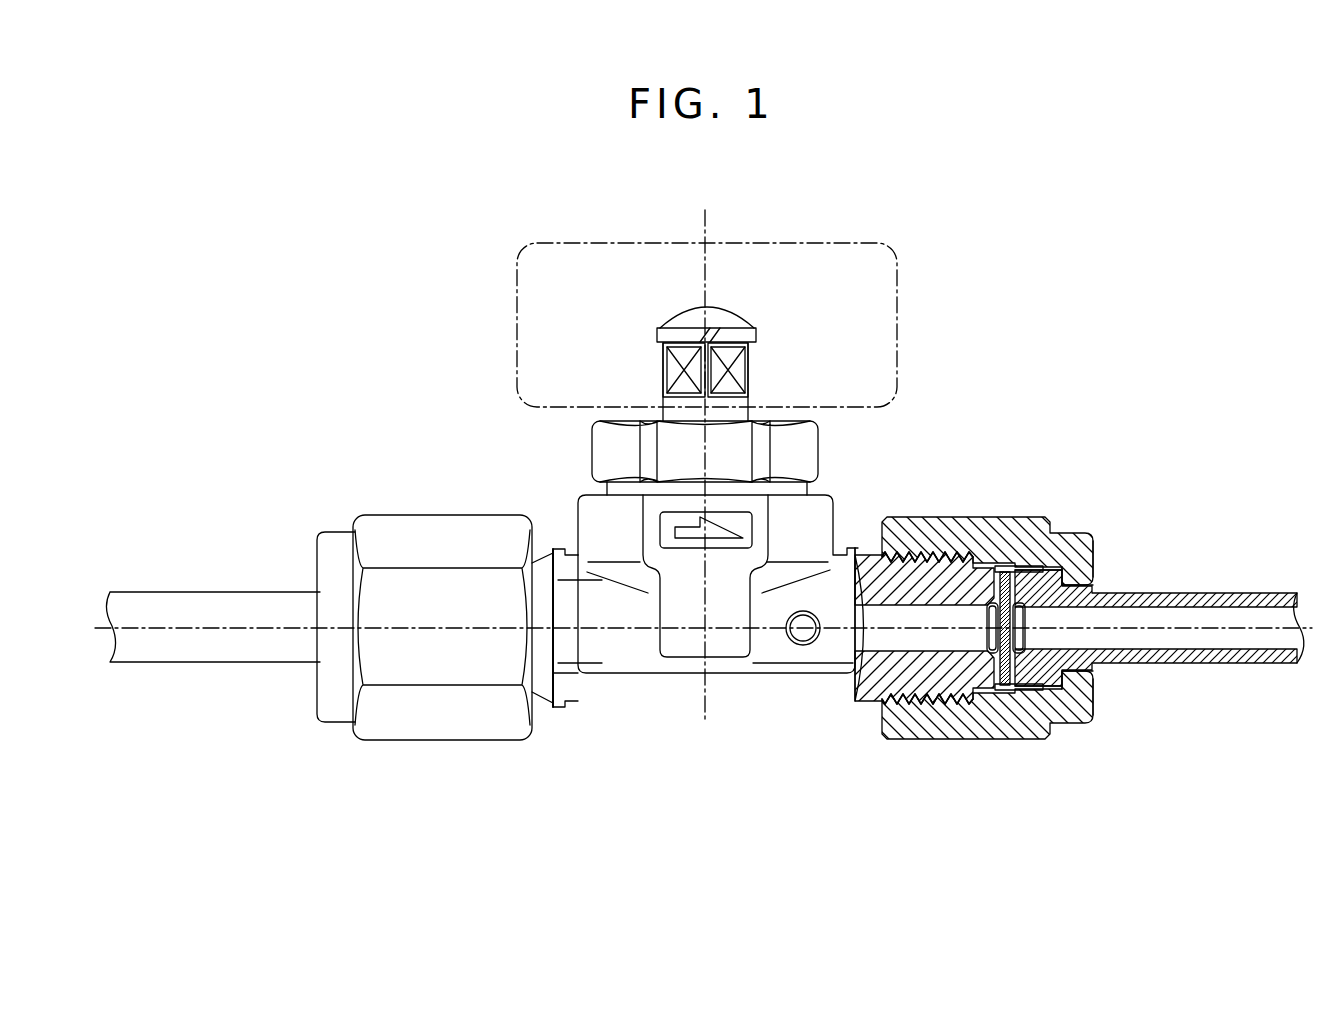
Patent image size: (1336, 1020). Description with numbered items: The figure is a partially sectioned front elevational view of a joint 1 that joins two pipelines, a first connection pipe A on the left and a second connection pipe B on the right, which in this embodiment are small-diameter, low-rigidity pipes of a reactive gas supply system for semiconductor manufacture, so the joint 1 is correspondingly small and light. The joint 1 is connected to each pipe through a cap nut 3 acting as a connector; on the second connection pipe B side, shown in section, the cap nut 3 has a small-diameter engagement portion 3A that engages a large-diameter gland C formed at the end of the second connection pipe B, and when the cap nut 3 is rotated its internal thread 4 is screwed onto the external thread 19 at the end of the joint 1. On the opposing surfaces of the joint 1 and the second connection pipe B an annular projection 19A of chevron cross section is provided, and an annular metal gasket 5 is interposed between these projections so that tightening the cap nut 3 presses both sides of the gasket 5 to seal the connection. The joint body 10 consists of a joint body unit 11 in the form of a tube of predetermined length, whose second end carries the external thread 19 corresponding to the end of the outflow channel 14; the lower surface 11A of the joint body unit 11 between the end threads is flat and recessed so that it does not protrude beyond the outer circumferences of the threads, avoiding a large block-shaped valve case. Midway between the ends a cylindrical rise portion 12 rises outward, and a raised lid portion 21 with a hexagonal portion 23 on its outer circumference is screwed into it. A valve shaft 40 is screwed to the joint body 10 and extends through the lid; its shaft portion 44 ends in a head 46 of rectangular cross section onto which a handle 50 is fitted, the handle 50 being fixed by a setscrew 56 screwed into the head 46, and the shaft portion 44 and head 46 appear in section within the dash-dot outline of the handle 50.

The joint 1 is at (973, 290).
The cap nut 3 is at (435, 530).
The small-diameter engagement portion 3A is at (1082, 577).
The internal thread 4 is at (906, 560).
The annular metal gasket 5 is at (1003, 690).
The joint body 10 is at (608, 660).
The joint body unit 11 is at (848, 543).
The lower surface 11A is at (753, 677).
The cylindrical rise portion 12 is at (578, 522).
The outflow channel 14 is at (930, 642).
The external thread 19 is at (920, 572).
The annular projection 19A is at (967, 568).
The raised lid portion 21 is at (601, 455).
The hexagonal portion 23 is at (810, 445).
The valve shaft 40 is at (673, 398).
The shaft portion 44 is at (750, 363).
The head 46 is at (728, 370).
The handle 50 is at (815, 243).
The setscrew 56 is at (740, 307).
The first connection pipe A is at (208, 601).
The second connection pipe B is at (1210, 593).
The large-diameter gland C is at (1093, 557).
The sealing portion D is at (1020, 580).